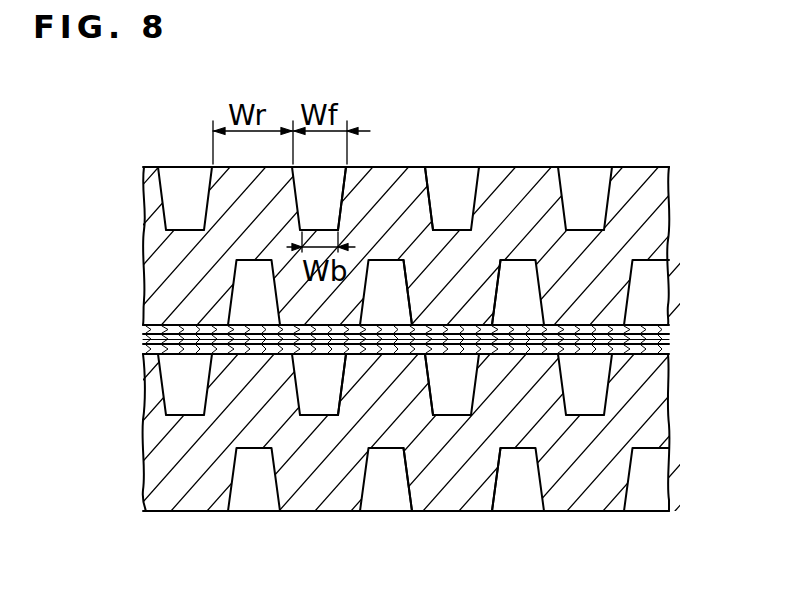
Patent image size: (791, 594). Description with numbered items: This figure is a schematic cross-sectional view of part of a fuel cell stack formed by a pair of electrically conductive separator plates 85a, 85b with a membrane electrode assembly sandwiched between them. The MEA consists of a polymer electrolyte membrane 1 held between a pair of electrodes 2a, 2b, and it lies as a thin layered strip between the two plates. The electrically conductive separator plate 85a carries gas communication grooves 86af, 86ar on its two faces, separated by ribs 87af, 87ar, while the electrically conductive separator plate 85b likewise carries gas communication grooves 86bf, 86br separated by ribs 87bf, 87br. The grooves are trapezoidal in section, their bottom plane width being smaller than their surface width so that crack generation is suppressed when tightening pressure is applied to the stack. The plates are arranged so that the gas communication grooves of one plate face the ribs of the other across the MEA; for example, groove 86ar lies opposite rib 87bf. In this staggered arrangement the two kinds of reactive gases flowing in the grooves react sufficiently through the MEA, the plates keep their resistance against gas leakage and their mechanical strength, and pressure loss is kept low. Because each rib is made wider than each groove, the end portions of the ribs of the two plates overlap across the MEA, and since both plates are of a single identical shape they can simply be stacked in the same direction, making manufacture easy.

The polymer electrolyte membrane 1 is at (143, 339).
The electrode 2a is at (143, 329).
The electrode 2b is at (142, 350).
The electrically conductive separator plate 85a is at (141, 248).
The electrically conductive separator plate 85b is at (137, 413).
The gas communication groove 86af is at (455, 196).
The gas communication groove 86ar is at (381, 282).
The gas communication groove 86bf is at (455, 393).
The gas communication groove 86br is at (389, 497).
The rib 87af is at (403, 192).
The rib 87ar is at (455, 298).
The rib 87bf is at (350, 388).
The rib 87br is at (449, 487).